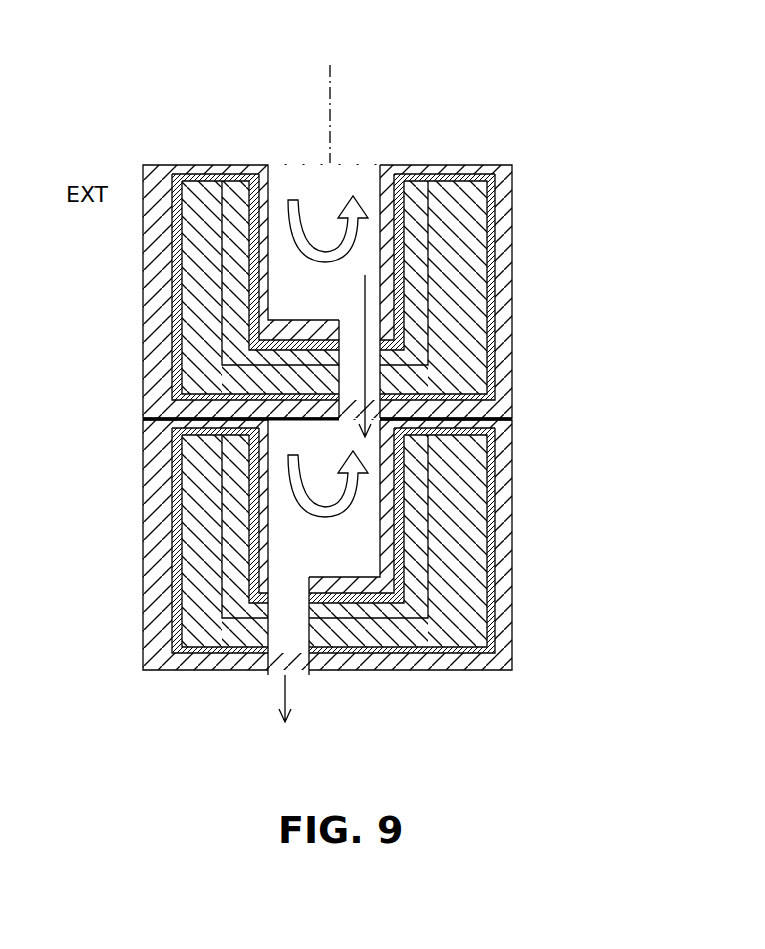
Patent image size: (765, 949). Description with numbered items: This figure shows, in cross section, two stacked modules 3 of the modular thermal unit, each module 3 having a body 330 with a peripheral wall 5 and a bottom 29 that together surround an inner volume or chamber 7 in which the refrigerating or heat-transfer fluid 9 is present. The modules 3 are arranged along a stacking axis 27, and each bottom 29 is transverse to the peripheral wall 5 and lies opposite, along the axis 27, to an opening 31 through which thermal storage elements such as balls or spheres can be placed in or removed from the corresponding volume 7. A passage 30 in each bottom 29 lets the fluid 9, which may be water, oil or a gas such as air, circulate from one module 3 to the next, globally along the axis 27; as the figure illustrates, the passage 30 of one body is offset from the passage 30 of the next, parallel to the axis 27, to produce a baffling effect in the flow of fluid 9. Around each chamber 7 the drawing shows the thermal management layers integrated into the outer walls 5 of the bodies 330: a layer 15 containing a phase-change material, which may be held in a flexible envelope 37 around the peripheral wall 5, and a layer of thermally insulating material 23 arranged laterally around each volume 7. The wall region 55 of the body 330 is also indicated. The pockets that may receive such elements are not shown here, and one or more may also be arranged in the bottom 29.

The module 3 is at (199, 163).
The peripheral wall 5 is at (512, 290).
The inner volume 7 is at (352, 183).
The heat-transfer fluid 9 is at (365, 348).
The PCM layer 15 is at (240, 268).
The thermally insulating material 23 is at (462, 218).
The stacking axis 27 is at (342, 66).
The bottom 29 is at (298, 318).
The passage 30 is at (370, 377).
The opening 31 is at (318, 160).
The envelope 37 is at (423, 177).
The chamber wall 55 is at (282, 192).
The body 330 is at (512, 172).